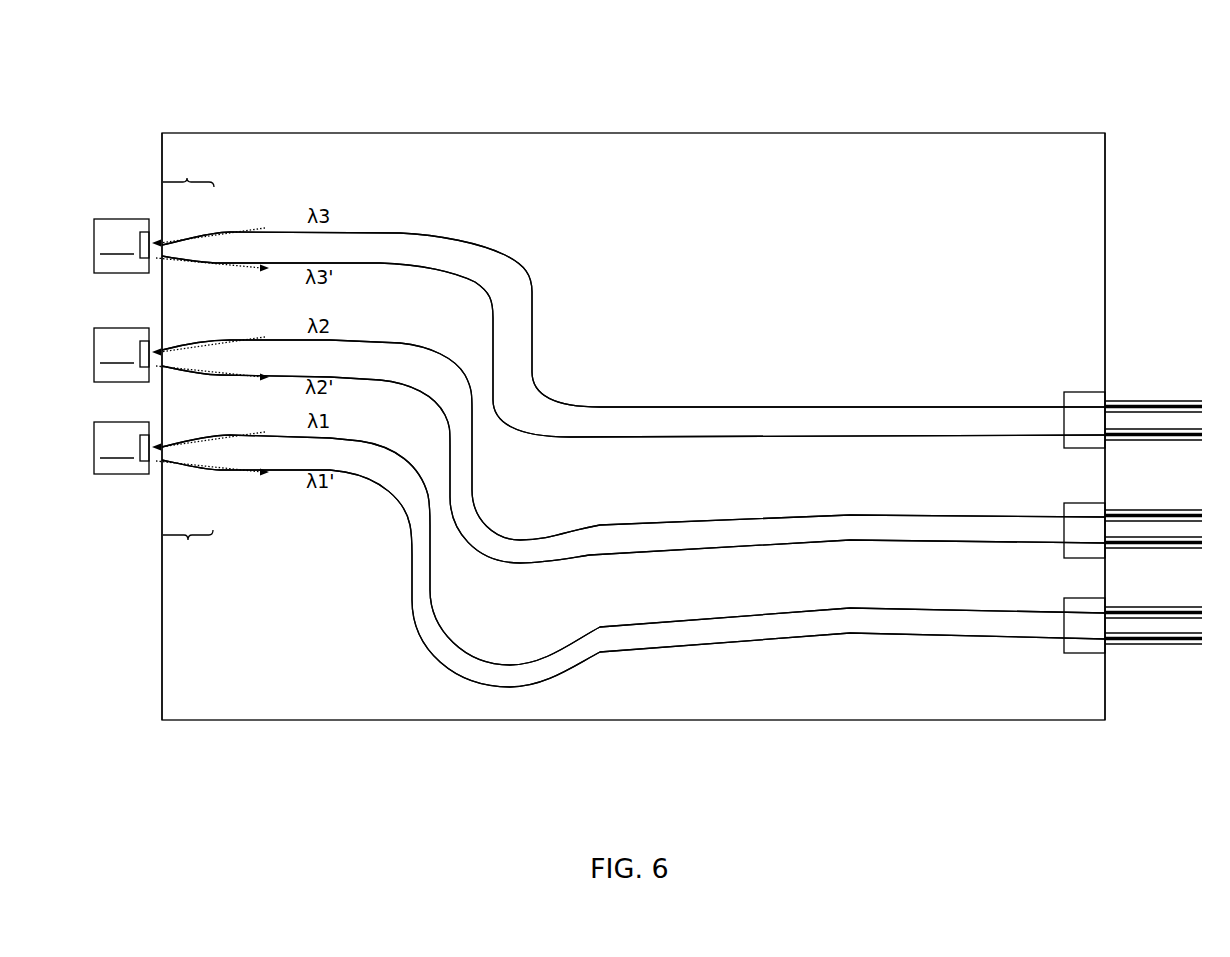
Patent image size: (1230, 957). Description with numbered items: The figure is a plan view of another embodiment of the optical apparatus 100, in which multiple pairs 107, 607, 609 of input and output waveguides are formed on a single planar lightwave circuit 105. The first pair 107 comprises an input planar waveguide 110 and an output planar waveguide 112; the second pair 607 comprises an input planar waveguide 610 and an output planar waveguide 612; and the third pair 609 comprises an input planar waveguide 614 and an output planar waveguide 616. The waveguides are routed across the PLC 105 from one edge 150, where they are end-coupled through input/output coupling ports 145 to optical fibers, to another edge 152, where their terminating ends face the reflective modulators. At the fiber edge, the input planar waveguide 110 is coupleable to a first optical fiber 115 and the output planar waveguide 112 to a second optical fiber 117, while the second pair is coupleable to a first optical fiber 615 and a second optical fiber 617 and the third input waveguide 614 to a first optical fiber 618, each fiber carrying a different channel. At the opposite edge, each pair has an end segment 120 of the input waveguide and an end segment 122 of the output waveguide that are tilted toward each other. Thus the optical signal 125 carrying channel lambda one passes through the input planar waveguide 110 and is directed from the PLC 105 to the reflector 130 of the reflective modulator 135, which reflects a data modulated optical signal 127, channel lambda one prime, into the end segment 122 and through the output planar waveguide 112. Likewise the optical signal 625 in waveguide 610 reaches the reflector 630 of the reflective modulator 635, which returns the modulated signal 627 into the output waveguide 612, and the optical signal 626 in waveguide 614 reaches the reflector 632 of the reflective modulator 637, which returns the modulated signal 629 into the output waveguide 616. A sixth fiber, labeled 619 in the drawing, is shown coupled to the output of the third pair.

The optical apparatus 100 is at (133, 89).
The planar lightwave circuit 105 is at (829, 251).
The pair of input and output waveguides 107 is at (675, 596).
The input planar waveguide 110 is at (792, 608).
The output planar waveguide 112 is at (738, 638).
The first optical fiber 115 is at (1123, 605).
The second optical fiber 117 is at (1122, 645).
The end segment of input planar waveguide 120 is at (188, 177).
The end segment of output planar waveguide 122 is at (190, 543).
The optical signal 125 is at (245, 435).
The data modulated optical signal 127 is at (245, 475).
The reflector 130 is at (141, 436).
The reflective modulator 135 is at (121, 448).
The input/output coupling ports 145 is at (1061, 390).
The edge of the PLC 150 is at (1106, 187).
The another edge of the PLC 152 is at (162, 163).
The pair of input and output waveguides 607 is at (825, 500).
The pair of input and output waveguides 609 is at (646, 390).
The input planar waveguide 610 is at (942, 515).
The output planar waveguide 612 is at (887, 545).
The input planar waveguide 614 is at (763, 407).
The first optical fiber 615 is at (1177, 509).
The output planar waveguide 616 is at (708, 434).
The second optical fiber 617 is at (1177, 550).
The first optical fiber 618 is at (1120, 400).
The sixth optical fiber 619 is at (1120, 441).
The optical signal 625 is at (245, 338).
The optical signal 626 is at (245, 231).
The data modulated optical signal 627 is at (233, 378).
The data modulated optical signal 629 is at (245, 270).
The reflector 630 is at (141, 341).
The reflector 632 is at (141, 232).
The reflective modulator 635 is at (121, 355).
The reflective modulator 637 is at (121, 246).